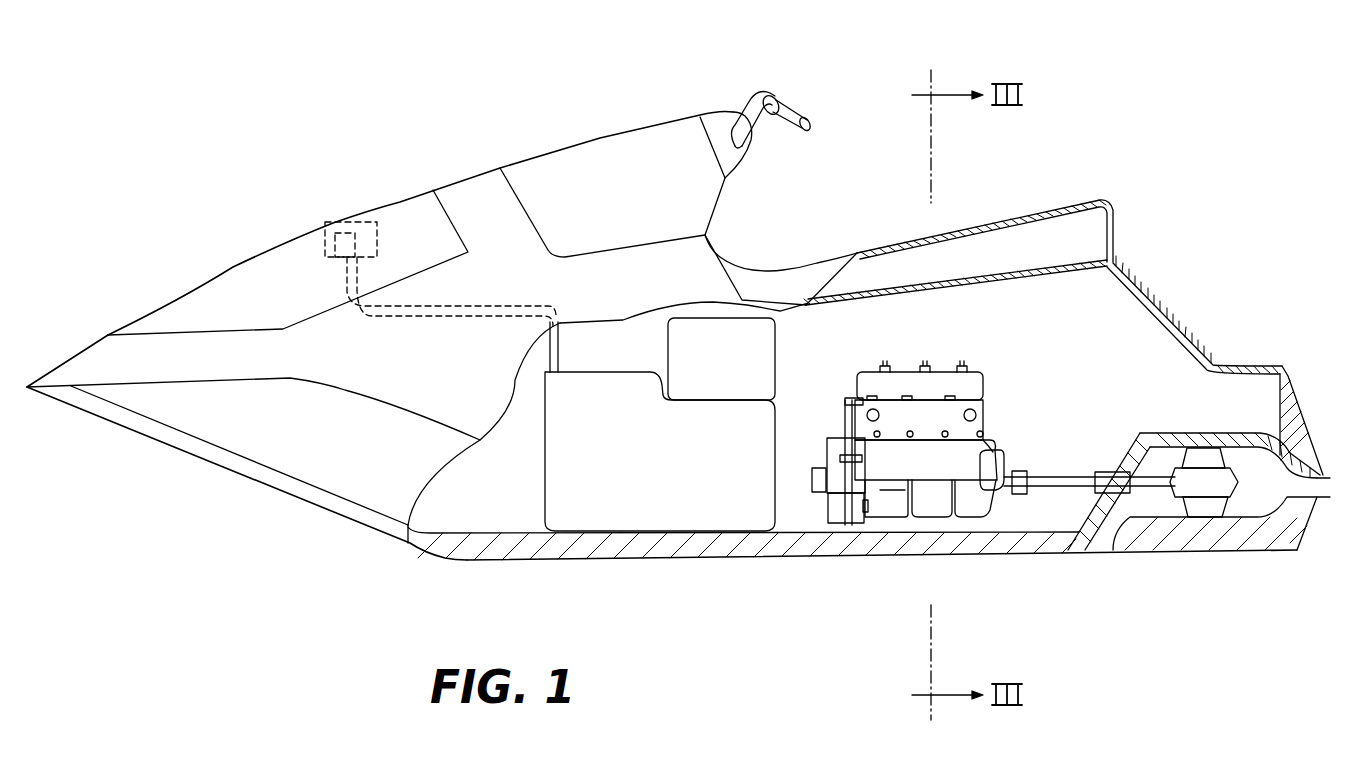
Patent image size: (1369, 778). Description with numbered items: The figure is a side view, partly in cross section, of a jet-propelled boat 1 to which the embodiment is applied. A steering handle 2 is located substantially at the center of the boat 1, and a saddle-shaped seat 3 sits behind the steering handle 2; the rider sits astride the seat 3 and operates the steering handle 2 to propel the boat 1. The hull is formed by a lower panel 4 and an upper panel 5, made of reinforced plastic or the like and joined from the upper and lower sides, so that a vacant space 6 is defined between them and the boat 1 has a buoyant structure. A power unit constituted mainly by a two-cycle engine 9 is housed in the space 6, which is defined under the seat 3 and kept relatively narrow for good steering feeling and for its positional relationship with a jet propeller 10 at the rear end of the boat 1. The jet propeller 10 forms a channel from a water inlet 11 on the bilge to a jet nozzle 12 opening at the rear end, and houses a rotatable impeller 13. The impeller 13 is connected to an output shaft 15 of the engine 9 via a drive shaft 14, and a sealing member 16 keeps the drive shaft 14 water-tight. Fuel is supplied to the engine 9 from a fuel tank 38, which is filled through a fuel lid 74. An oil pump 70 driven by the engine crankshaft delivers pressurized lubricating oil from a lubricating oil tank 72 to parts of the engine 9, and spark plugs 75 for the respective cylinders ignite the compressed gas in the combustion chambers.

The jet-propelled boat 1 is at (460, 173).
The steering handle 2 is at (755, 88).
The seat 3 is at (1050, 205).
The lower panel 4 is at (777, 557).
The upper panel 5 is at (1173, 318).
The space 6 is at (1074, 345).
The engine 9 is at (985, 385).
The jet propeller 10 is at (1160, 433).
The water inlet 11 is at (1103, 545).
The jet nozzle 12 is at (1320, 487).
The impeller 13 is at (1200, 508).
The drive shaft 14 is at (1060, 476).
The output shaft 15 is at (1007, 492).
The sealing member 16 is at (1107, 470).
The fuel tank 38 is at (545, 492).
The oil pump 70 is at (812, 478).
The lubricating oil tank 72 is at (775, 357).
The fuel lid 74 is at (347, 218).
The spark plugs 75 is at (885, 368).